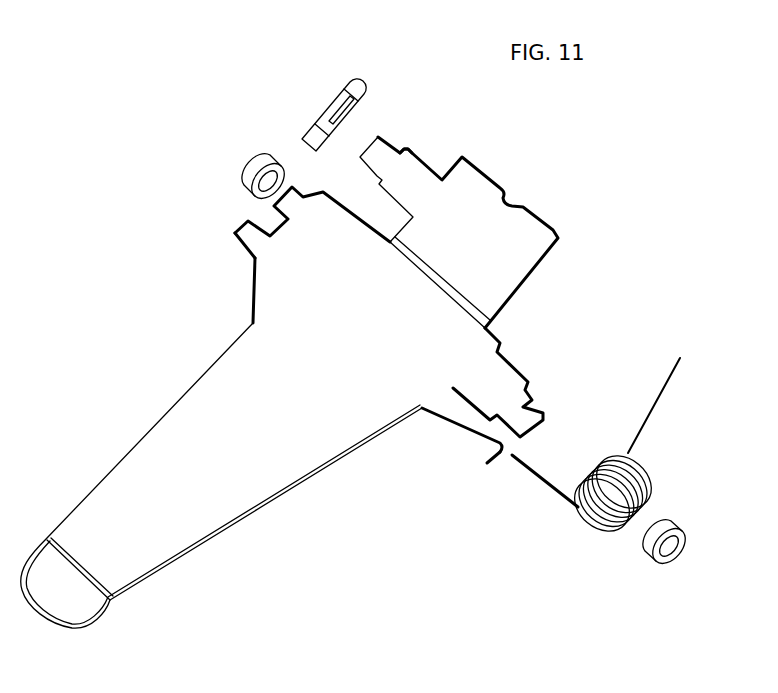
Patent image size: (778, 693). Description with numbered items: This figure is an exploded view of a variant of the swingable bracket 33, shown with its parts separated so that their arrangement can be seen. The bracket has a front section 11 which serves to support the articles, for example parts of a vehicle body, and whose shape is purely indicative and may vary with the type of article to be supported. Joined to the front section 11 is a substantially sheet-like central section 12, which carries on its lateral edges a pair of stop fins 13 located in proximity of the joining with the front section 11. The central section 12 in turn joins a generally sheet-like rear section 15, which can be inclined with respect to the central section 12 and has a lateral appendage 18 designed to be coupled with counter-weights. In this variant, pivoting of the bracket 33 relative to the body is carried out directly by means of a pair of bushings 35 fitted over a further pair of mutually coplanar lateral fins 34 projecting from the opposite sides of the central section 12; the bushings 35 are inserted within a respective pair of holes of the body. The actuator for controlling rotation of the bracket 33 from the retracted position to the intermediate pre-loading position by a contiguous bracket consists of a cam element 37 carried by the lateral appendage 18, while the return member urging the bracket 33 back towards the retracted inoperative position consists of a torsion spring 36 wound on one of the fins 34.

The front section 11 is at (122, 457).
The central section 12 is at (268, 322).
The stop fins 13 is at (237, 234).
The rear section 15 is at (487, 216).
The lateral appendage 18 is at (410, 163).
The swingable bracket 33 is at (124, 296).
The lateral fins 34 is at (295, 197).
The bushings 35 is at (243, 178).
The torsion spring 36 is at (582, 520).
The cam element 37 is at (333, 100).